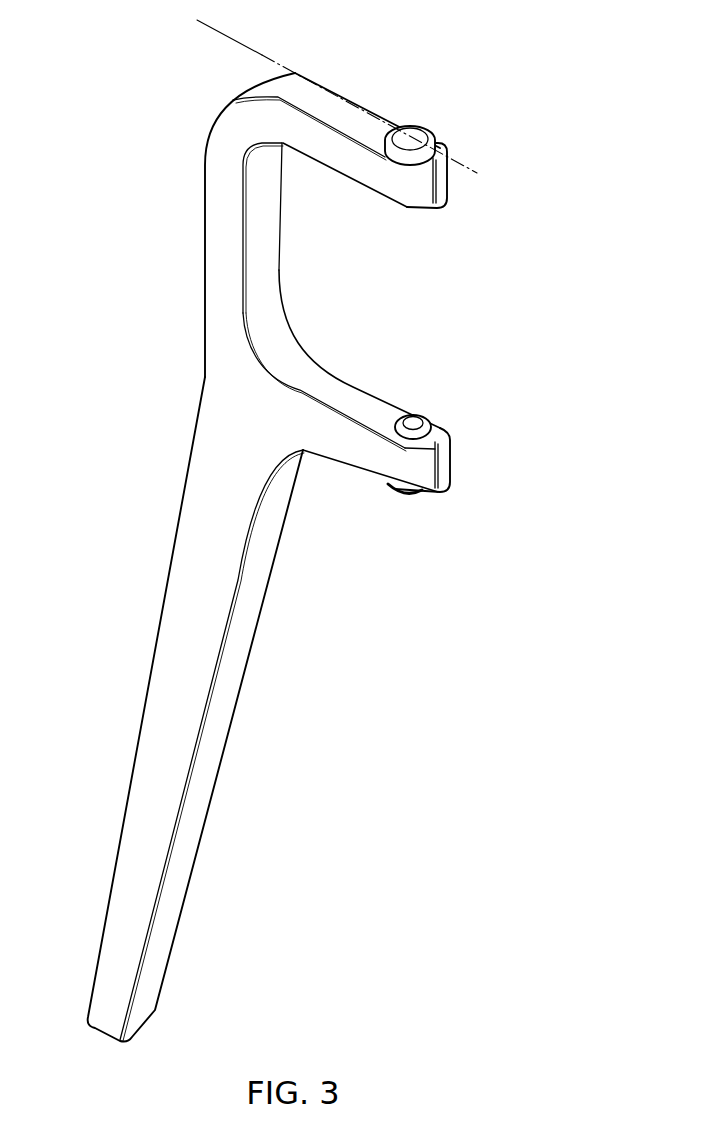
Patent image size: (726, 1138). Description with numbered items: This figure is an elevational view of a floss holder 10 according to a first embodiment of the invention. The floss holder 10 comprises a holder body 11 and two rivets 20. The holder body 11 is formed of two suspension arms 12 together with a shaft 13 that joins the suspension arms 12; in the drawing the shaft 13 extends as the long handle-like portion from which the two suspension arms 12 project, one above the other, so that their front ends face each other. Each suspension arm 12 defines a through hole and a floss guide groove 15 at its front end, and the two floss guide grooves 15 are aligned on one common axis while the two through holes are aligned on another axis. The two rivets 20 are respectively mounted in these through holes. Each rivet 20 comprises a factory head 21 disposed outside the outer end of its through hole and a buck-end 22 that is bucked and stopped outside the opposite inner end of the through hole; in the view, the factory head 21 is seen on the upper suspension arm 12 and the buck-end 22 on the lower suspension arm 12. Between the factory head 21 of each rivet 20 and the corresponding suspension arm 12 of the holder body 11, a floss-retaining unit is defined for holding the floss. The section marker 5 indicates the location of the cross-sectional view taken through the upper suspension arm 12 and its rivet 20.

The section line 5- 5 is at (197, 20).
The floss holder 10 is at (284, 526).
The holder body 11 is at (200, 390).
The suspension arm 12 is at (340, 93).
The shaft 13 is at (163, 723).
The floss guide groove 15 is at (437, 196).
The rivet 20 is at (453, 238).
The factory head 21 is at (407, 127).
The buck-end 22 is at (423, 425).